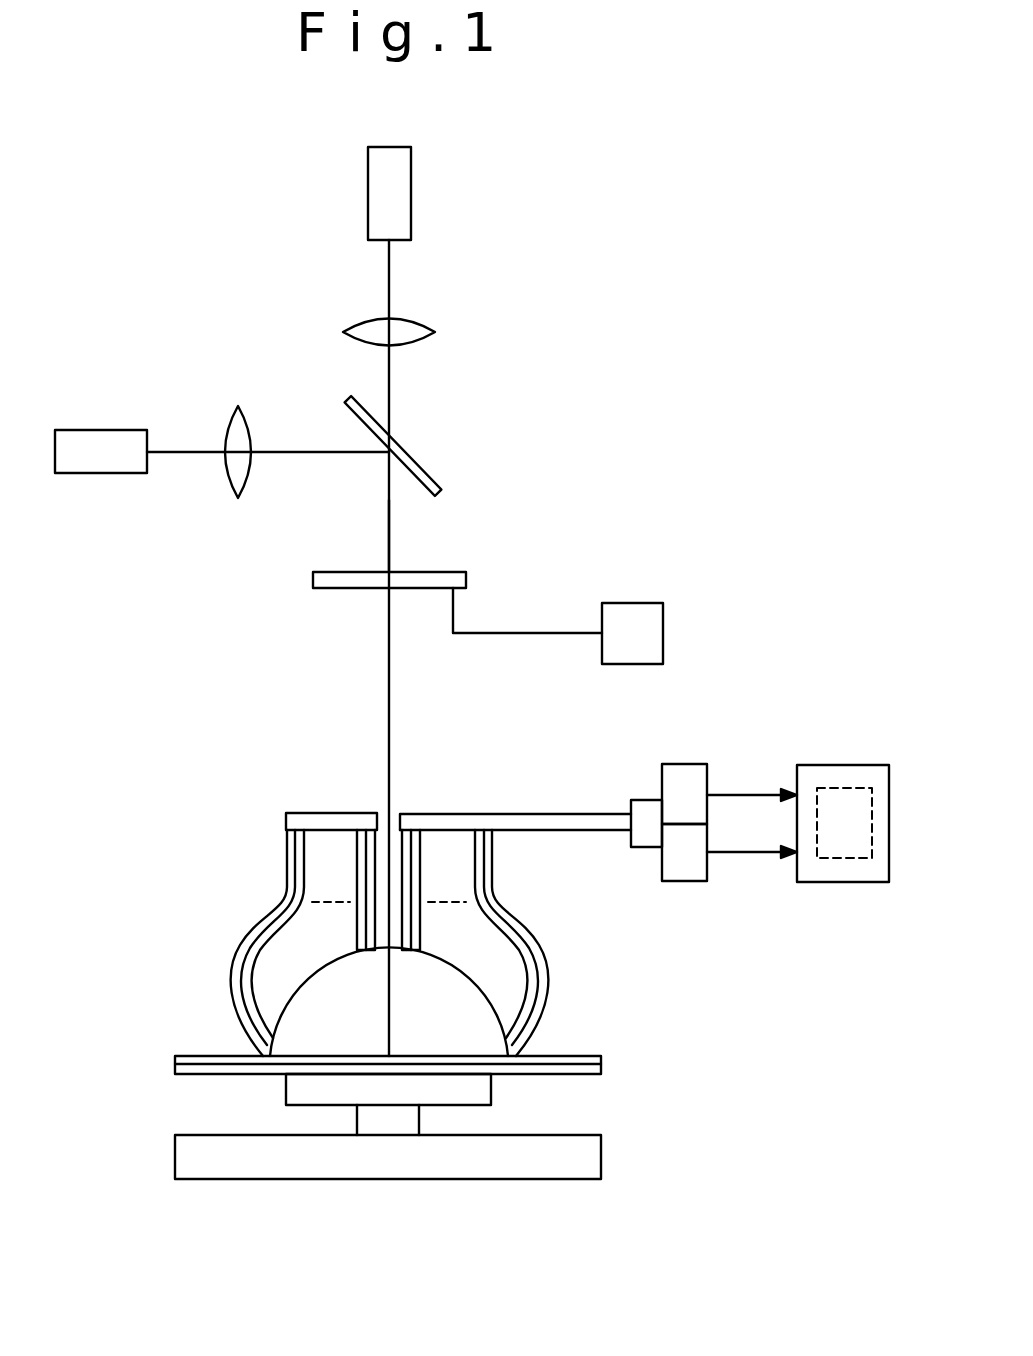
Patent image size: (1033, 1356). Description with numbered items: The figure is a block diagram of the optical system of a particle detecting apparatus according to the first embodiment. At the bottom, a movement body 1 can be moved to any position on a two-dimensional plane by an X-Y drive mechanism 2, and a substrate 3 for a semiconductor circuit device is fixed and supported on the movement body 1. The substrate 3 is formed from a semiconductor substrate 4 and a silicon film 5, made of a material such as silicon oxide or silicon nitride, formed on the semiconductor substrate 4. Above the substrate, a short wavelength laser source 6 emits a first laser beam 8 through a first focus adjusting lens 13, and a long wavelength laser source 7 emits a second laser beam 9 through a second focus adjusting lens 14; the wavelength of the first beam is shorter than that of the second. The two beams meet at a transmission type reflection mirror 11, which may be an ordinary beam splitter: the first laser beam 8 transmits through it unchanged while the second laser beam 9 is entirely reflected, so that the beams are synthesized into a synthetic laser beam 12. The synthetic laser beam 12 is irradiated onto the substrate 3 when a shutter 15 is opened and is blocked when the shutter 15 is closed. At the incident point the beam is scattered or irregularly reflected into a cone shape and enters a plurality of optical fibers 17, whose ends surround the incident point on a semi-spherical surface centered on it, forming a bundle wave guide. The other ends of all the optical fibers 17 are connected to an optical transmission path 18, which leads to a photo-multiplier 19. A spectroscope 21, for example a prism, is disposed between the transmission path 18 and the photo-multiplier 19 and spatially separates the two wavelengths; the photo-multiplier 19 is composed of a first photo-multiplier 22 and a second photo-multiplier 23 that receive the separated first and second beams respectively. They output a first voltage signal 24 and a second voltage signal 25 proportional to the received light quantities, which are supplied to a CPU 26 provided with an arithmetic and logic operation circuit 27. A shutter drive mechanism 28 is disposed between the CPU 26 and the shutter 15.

The movement body 1 is at (292, 1090).
The X-Y drive mechanism 2 is at (252, 1170).
The substrate 3 is at (547, 1081).
The semiconductor substrate 4 is at (604, 1067).
The silicon film 5 is at (408, 1062).
The short wavelength laser source 6 is at (404, 172).
The long wavelength laser source 7 is at (98, 437).
The first laser beam 8 is at (391, 383).
The second laser beam 9 is at (297, 451).
The transmission type reflection mirror 11 is at (414, 459).
The synthetic laser beam 12 is at (390, 534).
The first focus adjusting lens 13 is at (410, 323).
The second focus adjusting lens 14 is at (245, 485).
The shutter 15 is at (460, 583).
The optical fibers 17 is at (294, 862).
The optical transmission path 18 is at (504, 823).
The photo-multiplier 19 is at (702, 888).
The spectroscope 21 is at (642, 843).
The first photo-multiplier 22 is at (686, 776).
The second photo-multiplier 23 is at (684, 880).
The first voltage signal 24 is at (744, 794).
The second voltage signal 25 is at (745, 855).
The CPU 26 is at (818, 883).
The arithmetic and logic operation circuit 27 is at (862, 858).
The shutter drive mechanism 28 is at (617, 612).